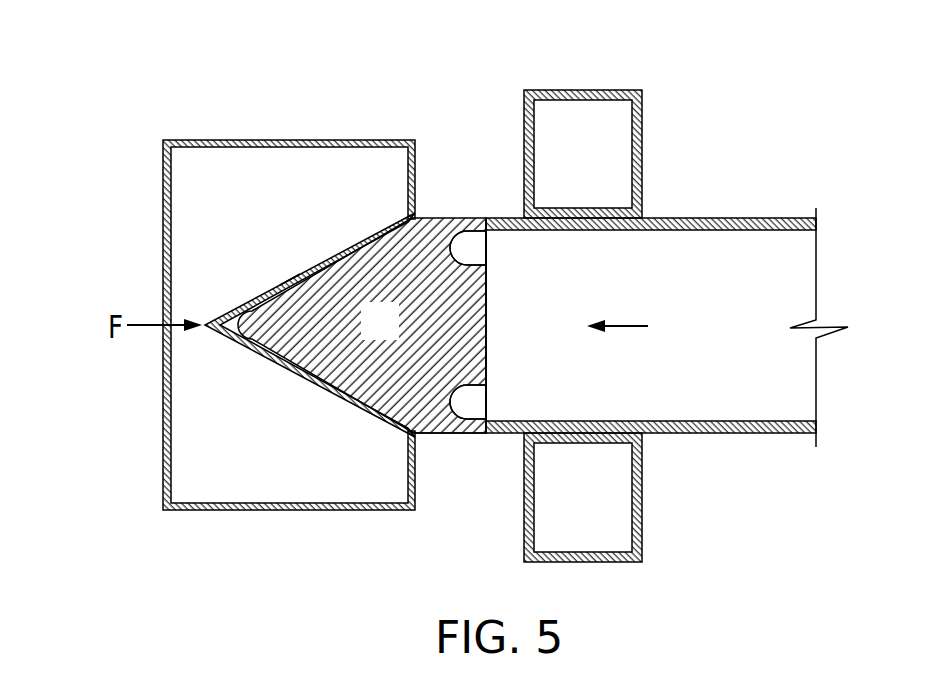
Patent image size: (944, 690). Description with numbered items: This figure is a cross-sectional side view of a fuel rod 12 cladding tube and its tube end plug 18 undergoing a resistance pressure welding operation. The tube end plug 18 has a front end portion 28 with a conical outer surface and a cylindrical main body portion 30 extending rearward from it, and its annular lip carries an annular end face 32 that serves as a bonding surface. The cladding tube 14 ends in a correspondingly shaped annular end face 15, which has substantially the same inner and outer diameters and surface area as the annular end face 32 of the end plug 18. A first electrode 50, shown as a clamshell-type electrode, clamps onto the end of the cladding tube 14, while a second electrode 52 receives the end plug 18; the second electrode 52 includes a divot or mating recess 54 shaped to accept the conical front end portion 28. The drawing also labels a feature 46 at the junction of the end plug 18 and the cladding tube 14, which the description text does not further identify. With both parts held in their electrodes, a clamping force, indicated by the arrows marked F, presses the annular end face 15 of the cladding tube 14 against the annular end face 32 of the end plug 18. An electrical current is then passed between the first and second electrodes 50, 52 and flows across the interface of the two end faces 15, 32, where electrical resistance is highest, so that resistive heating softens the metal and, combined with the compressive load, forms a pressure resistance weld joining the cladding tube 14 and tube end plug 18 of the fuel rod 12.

The fuel rod 12 is at (748, 469).
The cladding tube 14 is at (725, 218).
The annular end face 15 is at (476, 232).
The tube end plug 18 is at (394, 336).
The front end portion 28 is at (297, 376).
The main body portion 30 is at (443, 434).
The annular end face 32 is at (500, 436).
The groove 46 is at (463, 236).
The first electrode 50 is at (548, 90).
The second electrode 52 is at (163, 397).
The mating recess 54 is at (298, 282).